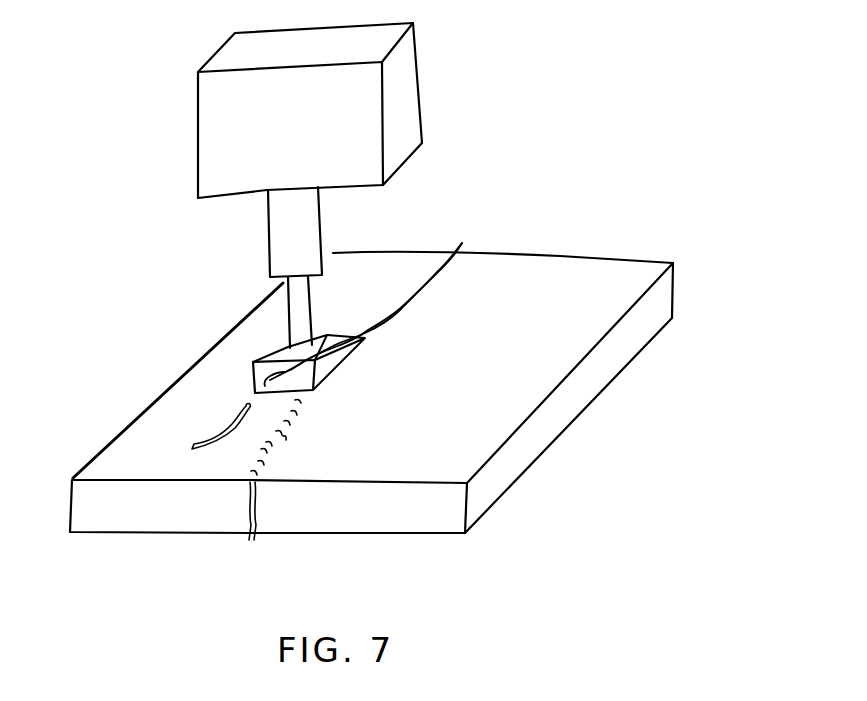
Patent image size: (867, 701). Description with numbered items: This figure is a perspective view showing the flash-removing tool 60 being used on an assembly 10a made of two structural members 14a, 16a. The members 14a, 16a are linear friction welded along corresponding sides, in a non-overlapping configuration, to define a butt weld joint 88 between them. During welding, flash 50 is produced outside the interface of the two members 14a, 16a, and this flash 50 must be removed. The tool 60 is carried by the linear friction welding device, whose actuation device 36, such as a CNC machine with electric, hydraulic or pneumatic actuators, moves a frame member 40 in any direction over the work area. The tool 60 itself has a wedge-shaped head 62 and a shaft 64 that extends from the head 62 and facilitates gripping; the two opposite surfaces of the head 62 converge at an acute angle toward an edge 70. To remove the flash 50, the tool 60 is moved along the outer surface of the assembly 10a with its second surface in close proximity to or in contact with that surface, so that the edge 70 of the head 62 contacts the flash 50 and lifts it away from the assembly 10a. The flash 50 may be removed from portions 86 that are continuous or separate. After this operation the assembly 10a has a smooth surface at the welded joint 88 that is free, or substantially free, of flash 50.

The assembly 10a is at (588, 188).
The actuation device 36 is at (268, 137).
The frame member 40 is at (282, 231).
The shaft 64 is at (262, 342).
The head 62 is at (253, 368).
The edge 70 is at (338, 330).
The tool 60 is at (257, 316).
The flash 50 is at (433, 265).
The first structural member 14a is at (175, 395).
The second structural member 16a is at (527, 385).
The portions 86 is at (212, 447).
The butt weld joint 88 is at (287, 447).